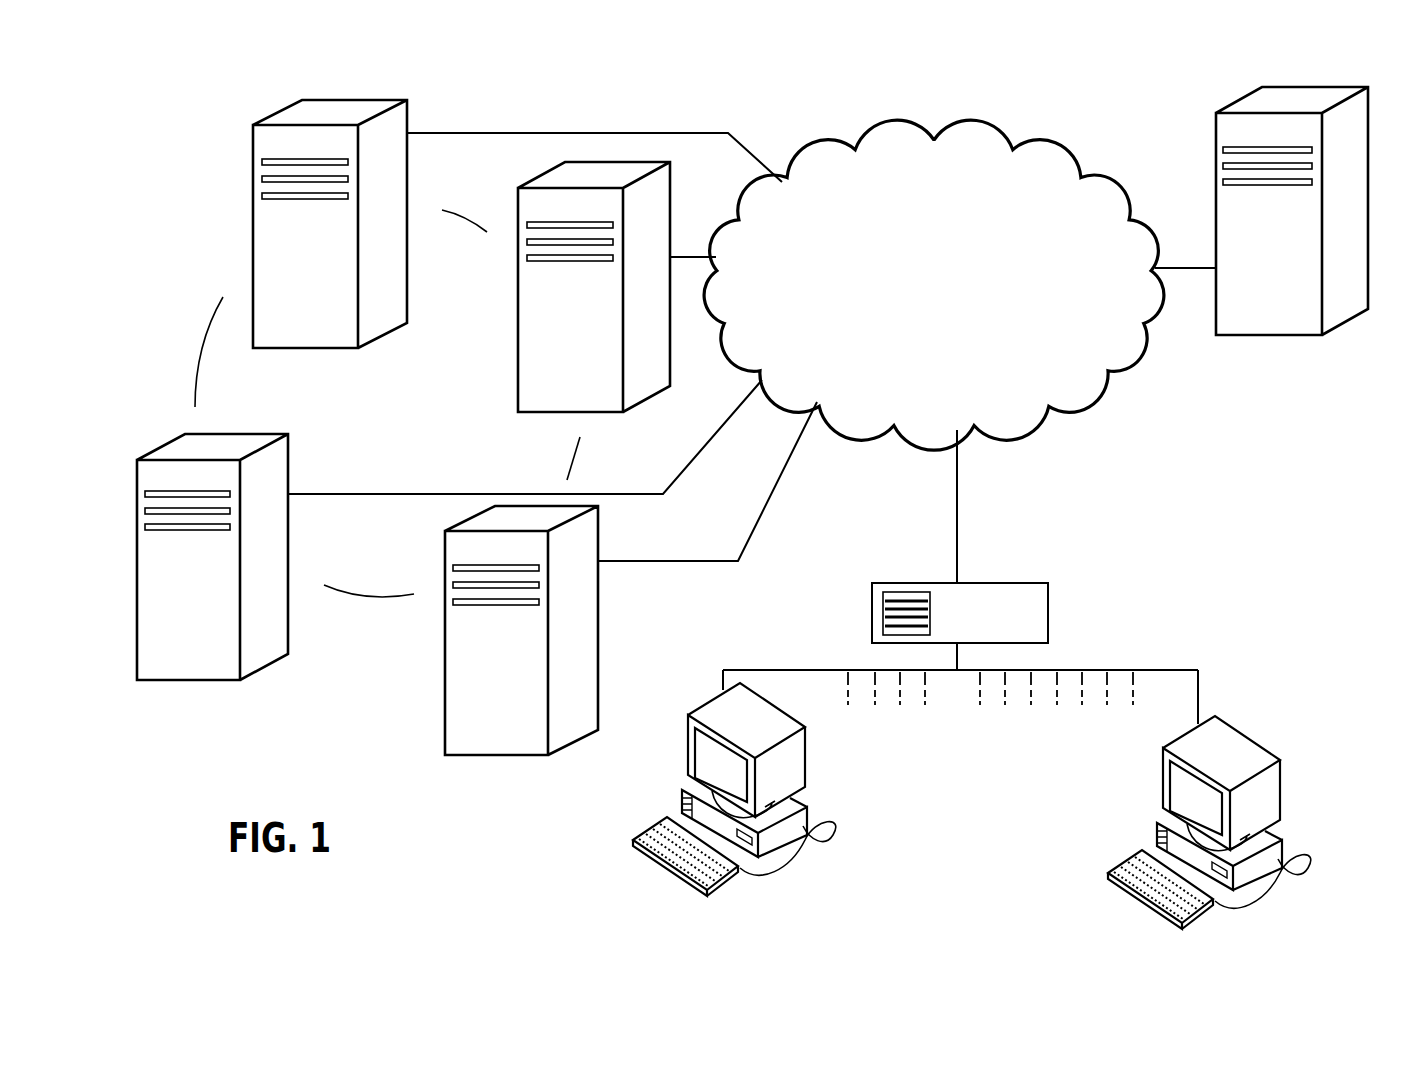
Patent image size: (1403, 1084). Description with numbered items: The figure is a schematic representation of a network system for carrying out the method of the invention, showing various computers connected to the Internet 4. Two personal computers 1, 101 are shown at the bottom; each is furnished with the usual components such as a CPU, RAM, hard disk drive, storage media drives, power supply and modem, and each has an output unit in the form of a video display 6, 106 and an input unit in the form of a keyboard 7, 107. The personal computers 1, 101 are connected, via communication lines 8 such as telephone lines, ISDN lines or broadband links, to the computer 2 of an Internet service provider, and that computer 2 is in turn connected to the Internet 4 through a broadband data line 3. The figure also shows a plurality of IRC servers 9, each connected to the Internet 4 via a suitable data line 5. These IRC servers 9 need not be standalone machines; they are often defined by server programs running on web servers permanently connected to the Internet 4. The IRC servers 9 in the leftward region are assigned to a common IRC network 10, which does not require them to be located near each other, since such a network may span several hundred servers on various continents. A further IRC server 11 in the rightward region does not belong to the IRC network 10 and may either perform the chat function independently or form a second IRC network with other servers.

The personal computer 1 is at (1273, 858).
The computer of the Internet service provider 2 is at (1048, 620).
The broadband data line 3 is at (957, 533).
The Internet 4 is at (1053, 178).
The data line 5 is at (713, 254).
The video display 6 is at (1257, 807).
The keyboard 7 is at (1140, 890).
The communication lines 8 is at (1147, 668).
The IRC server 9 is at (308, 323).
The IRC network 10 is at (364, 601).
The IRC server 11 is at (1287, 322).
The personal computer 101 is at (797, 823).
The video display 106 is at (782, 777).
The keyboard 107 is at (640, 867).